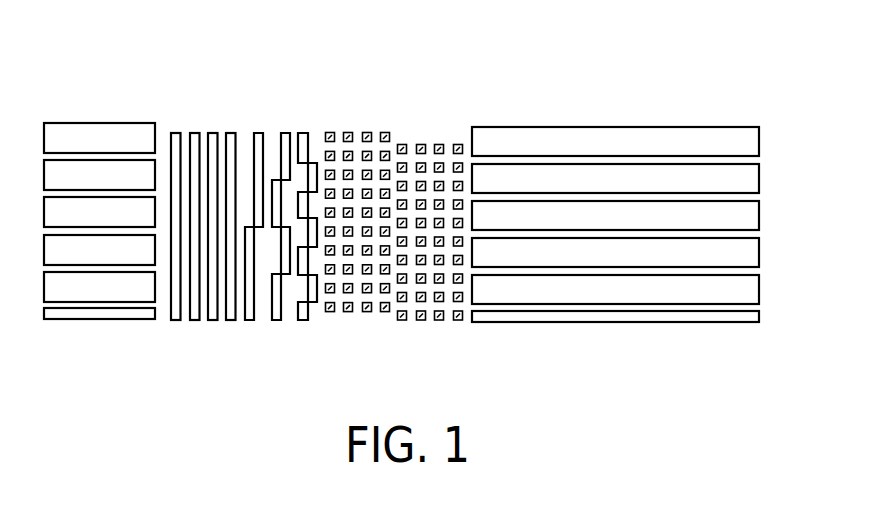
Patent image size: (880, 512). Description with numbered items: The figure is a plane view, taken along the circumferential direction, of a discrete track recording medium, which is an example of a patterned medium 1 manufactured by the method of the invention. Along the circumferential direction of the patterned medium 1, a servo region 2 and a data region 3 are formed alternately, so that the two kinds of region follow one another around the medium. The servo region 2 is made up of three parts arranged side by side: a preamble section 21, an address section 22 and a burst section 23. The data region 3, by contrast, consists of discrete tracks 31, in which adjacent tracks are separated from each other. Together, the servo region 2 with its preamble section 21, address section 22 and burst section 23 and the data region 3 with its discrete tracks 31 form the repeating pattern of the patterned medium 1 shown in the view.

The patterned medium 1 is at (102, 82).
The servo region 2 is at (169, 113).
The data region 3 is at (471, 114).
The preamble section 21 is at (168, 330).
The address section 22 is at (315, 330).
The burst section 23 is at (323, 330).
The discrete track 31 is at (742, 146).